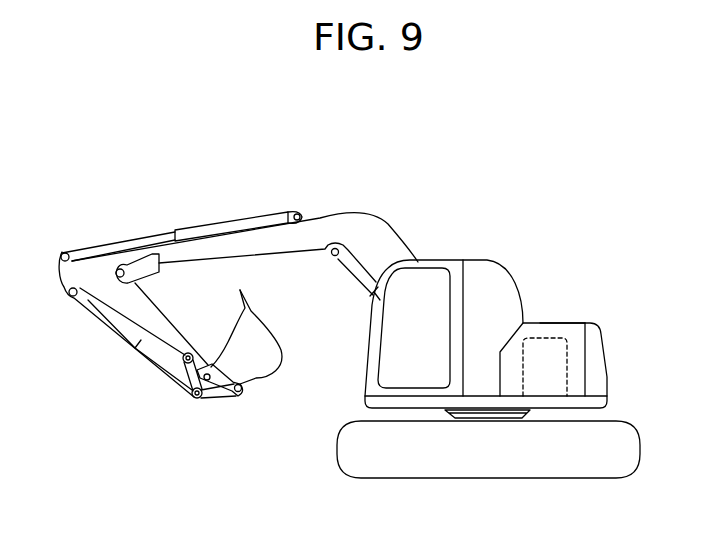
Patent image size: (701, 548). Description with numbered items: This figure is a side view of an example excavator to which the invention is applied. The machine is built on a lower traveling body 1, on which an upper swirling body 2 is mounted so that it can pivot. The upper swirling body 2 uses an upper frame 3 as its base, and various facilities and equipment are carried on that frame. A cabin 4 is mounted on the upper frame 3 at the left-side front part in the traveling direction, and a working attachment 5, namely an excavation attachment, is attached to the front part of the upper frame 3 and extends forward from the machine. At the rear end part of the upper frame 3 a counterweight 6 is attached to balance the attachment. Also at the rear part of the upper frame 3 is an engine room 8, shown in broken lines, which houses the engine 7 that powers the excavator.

The lower traveling body 1 is at (470, 479).
The upper swirling body 2 is at (488, 250).
The upper frame 3 is at (557, 410).
The cabin 4 is at (515, 290).
The working attachment 5 is at (262, 203).
The counterweight 6 is at (607, 365).
The engine 7 is at (569, 359).
The engine room 8 is at (573, 326).